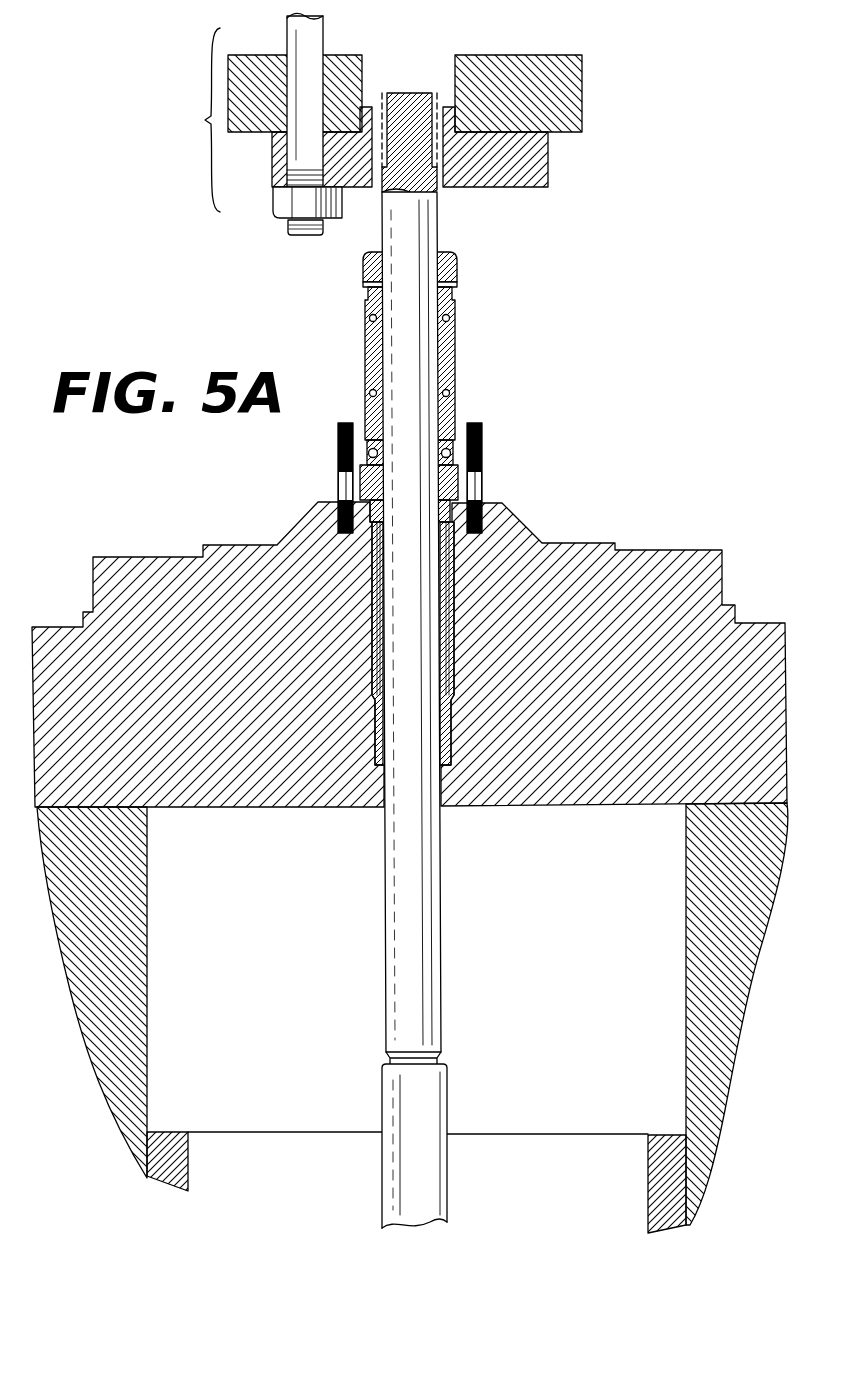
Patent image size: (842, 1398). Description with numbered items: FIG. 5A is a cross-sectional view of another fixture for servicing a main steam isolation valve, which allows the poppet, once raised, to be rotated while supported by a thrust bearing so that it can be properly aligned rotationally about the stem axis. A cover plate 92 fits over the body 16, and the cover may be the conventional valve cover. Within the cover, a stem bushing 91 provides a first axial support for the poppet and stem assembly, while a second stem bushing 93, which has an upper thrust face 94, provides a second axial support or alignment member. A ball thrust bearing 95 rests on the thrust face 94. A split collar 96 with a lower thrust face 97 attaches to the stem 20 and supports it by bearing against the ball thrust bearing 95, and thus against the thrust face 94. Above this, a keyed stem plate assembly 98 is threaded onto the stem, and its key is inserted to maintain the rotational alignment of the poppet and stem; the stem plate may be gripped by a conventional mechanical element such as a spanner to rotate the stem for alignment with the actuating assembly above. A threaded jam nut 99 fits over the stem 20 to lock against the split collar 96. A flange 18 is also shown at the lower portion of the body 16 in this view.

The body 16 is at (751, 948).
The flange 18 is at (190, 1167).
The stem 20 is at (444, 949).
The stem bushing 91 is at (377, 758).
The cover plate 92 is at (728, 583).
The second stem bushing 93 is at (370, 482).
The upper thrust face 94 is at (458, 490).
The ball thrust bearing 95 is at (448, 455).
The split collar 96 is at (455, 368).
The lower thrust face 97 is at (453, 443).
The keyed stem plate assembly 98 is at (380, 124).
The threaded jam nut 99 is at (456, 264).